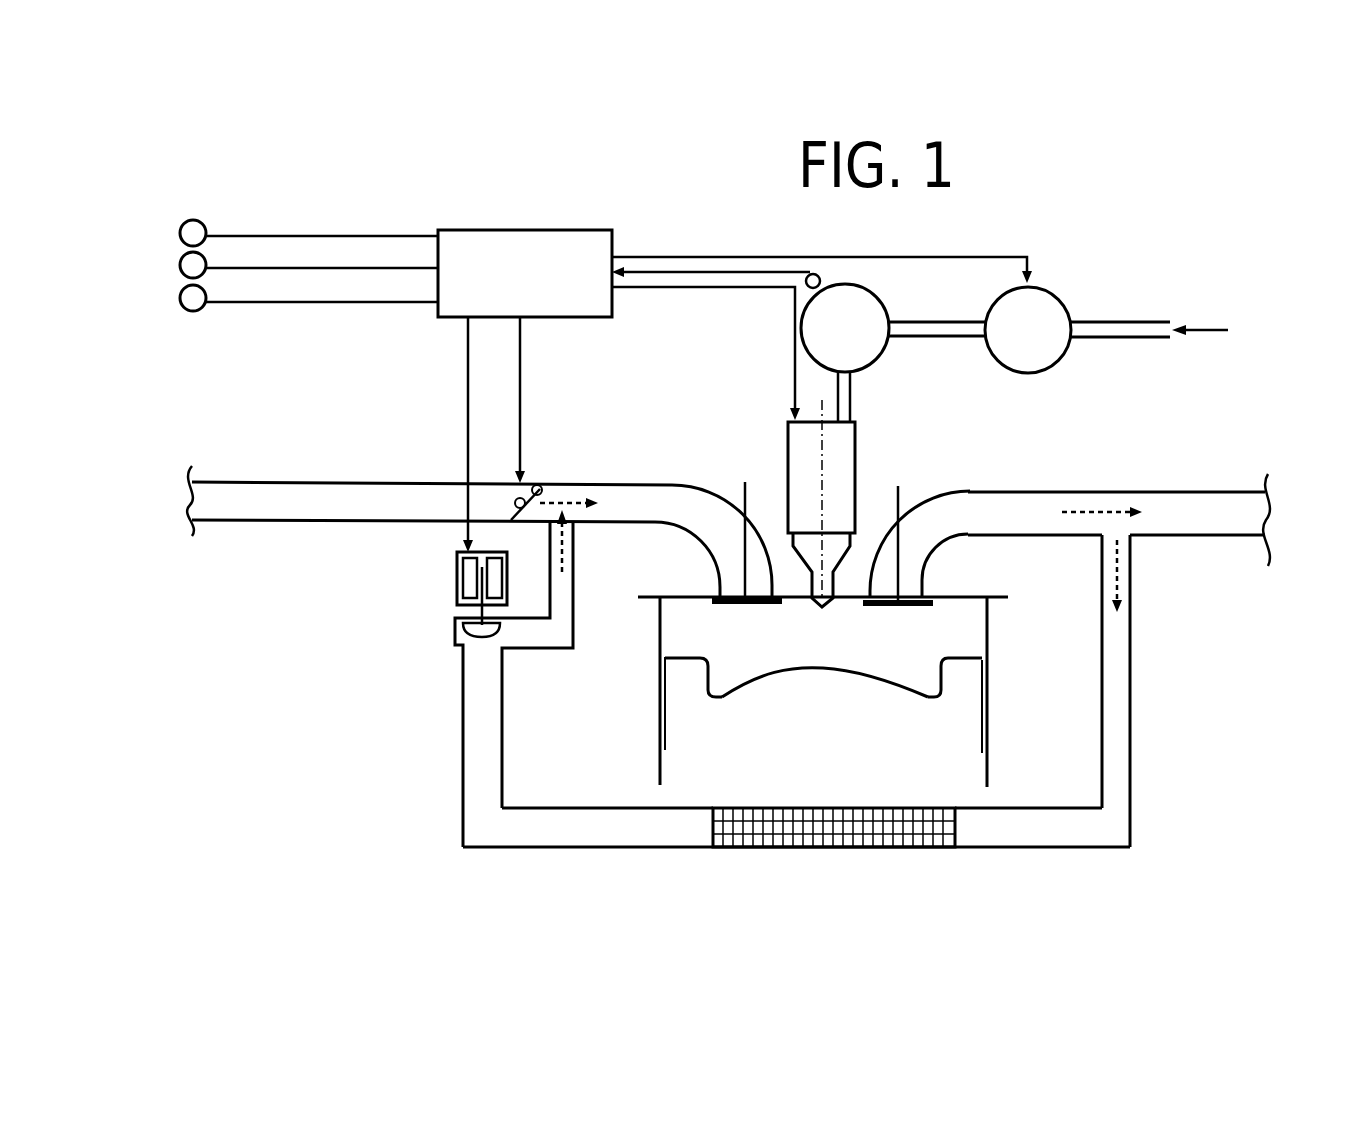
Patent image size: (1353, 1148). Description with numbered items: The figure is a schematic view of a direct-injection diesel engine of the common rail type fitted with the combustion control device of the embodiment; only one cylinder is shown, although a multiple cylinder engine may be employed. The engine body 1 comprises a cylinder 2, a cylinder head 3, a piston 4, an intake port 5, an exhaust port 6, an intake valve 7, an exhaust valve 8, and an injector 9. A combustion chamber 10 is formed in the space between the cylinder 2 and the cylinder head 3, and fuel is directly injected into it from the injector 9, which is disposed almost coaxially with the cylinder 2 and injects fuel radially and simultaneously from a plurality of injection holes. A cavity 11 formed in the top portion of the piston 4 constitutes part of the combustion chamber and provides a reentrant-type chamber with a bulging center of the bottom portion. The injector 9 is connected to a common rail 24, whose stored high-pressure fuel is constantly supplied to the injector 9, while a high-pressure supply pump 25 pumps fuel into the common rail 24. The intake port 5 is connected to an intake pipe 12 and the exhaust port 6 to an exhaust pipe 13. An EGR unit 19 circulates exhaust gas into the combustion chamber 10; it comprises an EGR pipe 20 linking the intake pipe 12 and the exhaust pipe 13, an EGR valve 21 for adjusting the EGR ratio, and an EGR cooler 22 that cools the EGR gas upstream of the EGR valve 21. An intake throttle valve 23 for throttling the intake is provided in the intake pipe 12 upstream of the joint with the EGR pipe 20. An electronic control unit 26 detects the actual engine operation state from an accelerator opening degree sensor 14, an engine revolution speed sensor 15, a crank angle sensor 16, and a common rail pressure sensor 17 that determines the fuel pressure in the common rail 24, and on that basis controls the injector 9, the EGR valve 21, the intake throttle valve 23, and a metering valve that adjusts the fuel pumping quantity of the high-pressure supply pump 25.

The engine body 1 is at (638, 725).
The cylinder 2 is at (978, 632).
The cylinder head 3 is at (968, 600).
The piston 4 is at (960, 731).
The intake port 5 is at (727, 537).
The exhaust port 6 is at (927, 540).
The intake valve 7 is at (745, 488).
The exhaust valve 8 is at (899, 490).
The injector 9 is at (843, 445).
The combustion chamber 10 is at (688, 633).
The cavity 11 is at (867, 672).
The intake pipe 12 is at (332, 522).
The exhaust pipe 13 is at (1113, 492).
The accelerator opening degree sensor 14 is at (184, 223).
The engine revolution speed sensor 15 is at (183, 256).
The crank angle sensor 16 is at (183, 288).
The common rail pressure sensor 17 is at (826, 276).
The EGR unit 19 is at (414, 566).
The EGR pipe 20 is at (1033, 850).
The EGR valve 21 is at (457, 565).
The EGR cooler 22 is at (862, 835).
The intake throttle valve 23 is at (543, 483).
The common rail 24 is at (867, 350).
The high-pressure supply pump 25 is at (1053, 353).
The electronic control unit 26 is at (546, 230).